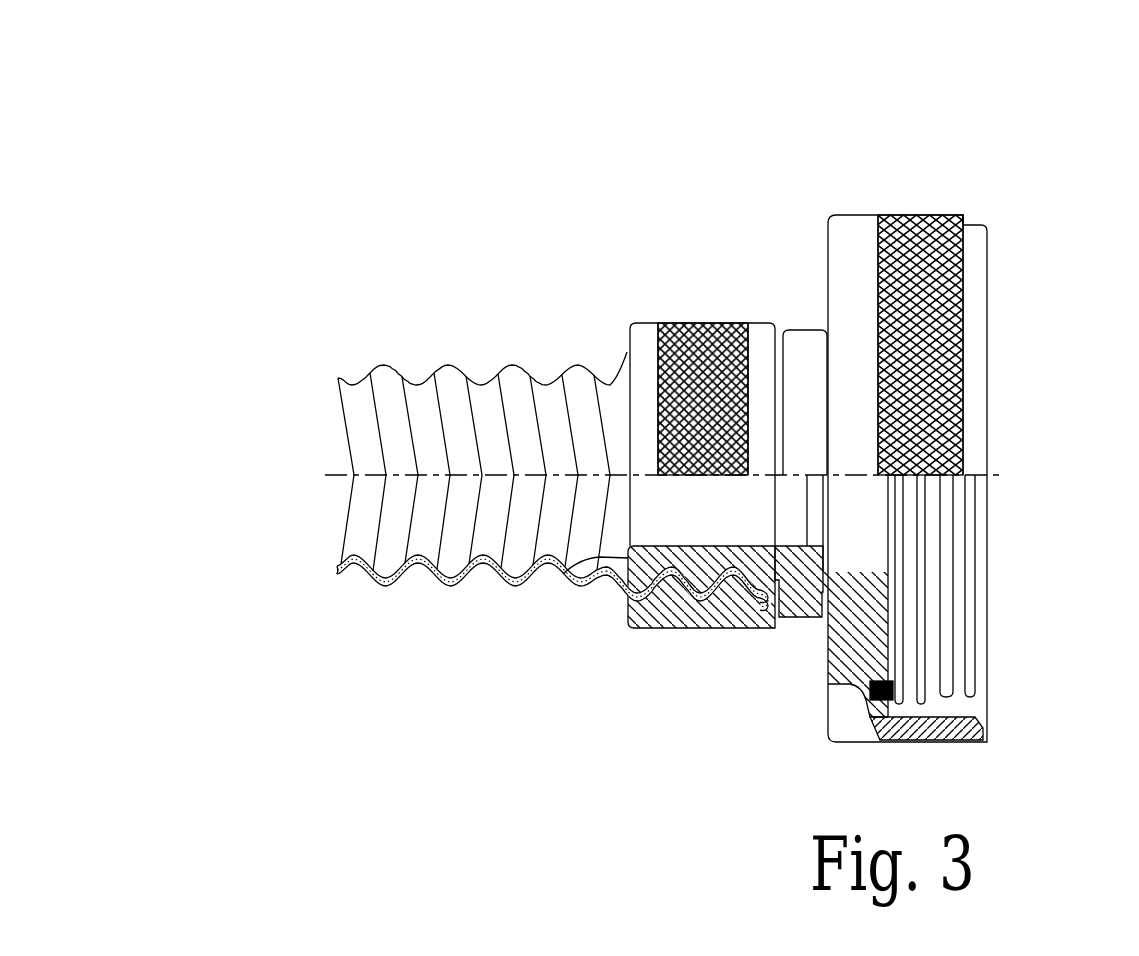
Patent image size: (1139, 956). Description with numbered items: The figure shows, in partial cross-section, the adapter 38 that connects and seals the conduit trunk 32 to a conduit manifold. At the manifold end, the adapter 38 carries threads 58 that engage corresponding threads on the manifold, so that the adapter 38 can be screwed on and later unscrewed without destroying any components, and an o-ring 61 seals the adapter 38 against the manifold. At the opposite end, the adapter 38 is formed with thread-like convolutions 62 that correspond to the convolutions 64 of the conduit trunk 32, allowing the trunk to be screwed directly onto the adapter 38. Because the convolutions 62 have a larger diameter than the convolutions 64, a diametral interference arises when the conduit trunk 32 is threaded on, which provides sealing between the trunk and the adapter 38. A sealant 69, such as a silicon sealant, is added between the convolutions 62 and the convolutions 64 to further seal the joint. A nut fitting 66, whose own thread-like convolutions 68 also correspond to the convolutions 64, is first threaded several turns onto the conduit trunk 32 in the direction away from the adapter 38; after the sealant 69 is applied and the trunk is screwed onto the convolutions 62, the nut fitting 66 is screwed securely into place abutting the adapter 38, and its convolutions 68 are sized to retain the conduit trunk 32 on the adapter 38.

The adapter 38 is at (787, 138).
The conduit trunk 32 is at (426, 342).
The nut fitting 66 is at (693, 323).
The thread-like convolutions 62 is at (800, 618).
The o-ring 61 is at (893, 690).
The threads 58 is at (965, 705).
The sealant 69 is at (563, 572).
The thread-like convolutions 68 is at (630, 606).
The convolutions 64 is at (318, 567).